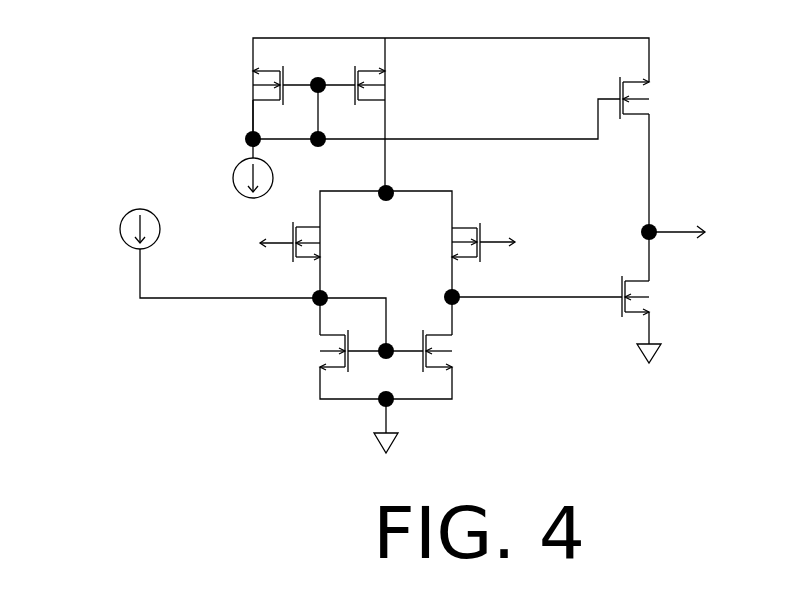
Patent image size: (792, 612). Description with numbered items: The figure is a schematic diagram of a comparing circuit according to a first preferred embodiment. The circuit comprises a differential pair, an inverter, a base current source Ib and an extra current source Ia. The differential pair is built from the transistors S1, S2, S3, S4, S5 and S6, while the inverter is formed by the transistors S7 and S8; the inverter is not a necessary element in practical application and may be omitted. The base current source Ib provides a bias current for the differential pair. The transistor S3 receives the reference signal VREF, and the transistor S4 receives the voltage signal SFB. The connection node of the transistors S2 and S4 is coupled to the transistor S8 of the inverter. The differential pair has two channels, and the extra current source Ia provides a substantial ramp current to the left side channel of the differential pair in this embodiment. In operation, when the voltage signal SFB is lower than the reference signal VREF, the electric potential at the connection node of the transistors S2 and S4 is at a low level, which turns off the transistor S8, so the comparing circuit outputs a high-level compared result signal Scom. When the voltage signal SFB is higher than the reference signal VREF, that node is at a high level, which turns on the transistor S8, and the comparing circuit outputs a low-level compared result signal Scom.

The transistor S1 is at (317, 351).
The transistor S2 is at (457, 351).
The transistor S3 is at (325, 242).
The transistor S4 is at (448, 242).
The transistor S5 is at (251, 85).
The transistor S6 is at (389, 85).
The transistor S7 is at (653, 98).
The transistor S8 is at (654, 296).
The extra current source Ia is at (123, 229).
The base current source Ib is at (237, 178).
The reference signal VREF is at (236, 244).
The voltage signal SFB is at (541, 244).
The compared result signal Scom is at (708, 233).